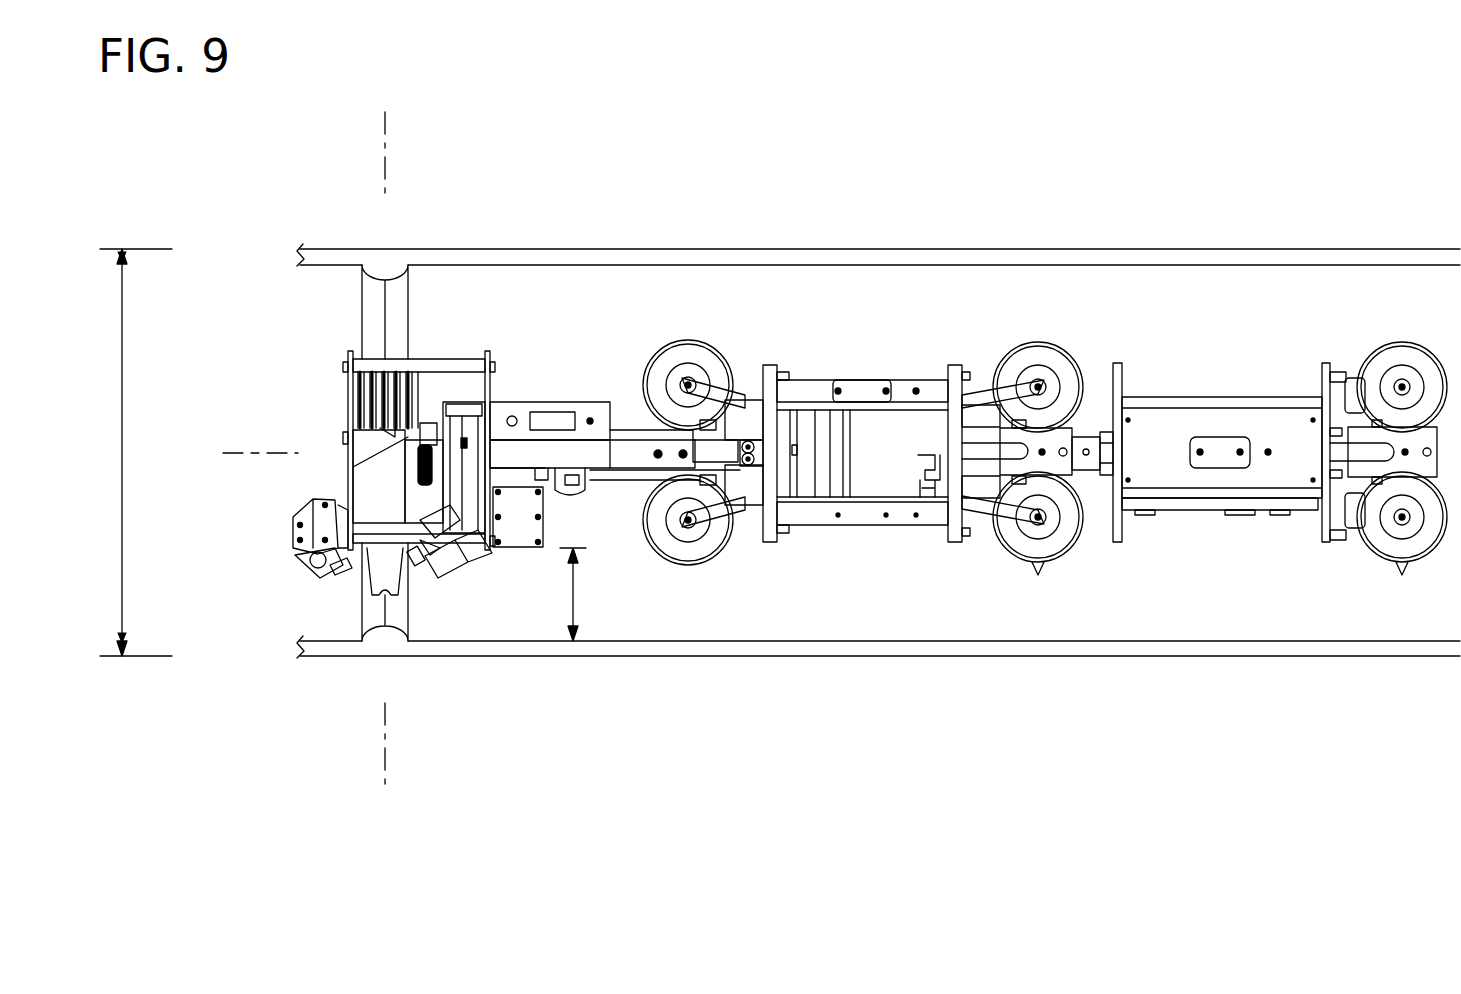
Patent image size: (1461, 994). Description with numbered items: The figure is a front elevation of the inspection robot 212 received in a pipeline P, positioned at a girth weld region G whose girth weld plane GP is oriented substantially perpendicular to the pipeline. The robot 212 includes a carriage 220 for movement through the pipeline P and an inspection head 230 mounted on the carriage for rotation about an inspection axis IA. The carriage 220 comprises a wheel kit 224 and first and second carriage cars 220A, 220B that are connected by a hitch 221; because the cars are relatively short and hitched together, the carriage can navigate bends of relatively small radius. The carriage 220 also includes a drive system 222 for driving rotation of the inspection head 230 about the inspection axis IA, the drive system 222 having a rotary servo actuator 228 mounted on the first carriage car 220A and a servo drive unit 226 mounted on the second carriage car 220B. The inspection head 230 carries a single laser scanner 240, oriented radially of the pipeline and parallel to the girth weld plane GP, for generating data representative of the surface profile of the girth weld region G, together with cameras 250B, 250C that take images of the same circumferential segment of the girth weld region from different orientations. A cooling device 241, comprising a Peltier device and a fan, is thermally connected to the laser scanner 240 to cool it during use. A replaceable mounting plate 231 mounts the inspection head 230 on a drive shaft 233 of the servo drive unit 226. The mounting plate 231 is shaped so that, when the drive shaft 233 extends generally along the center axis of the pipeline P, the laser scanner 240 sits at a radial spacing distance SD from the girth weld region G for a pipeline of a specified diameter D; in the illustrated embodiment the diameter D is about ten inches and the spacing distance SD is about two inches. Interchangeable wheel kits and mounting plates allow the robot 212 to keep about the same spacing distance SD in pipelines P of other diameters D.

The inspection robot 212 is at (489, 814).
The carriage 220 is at (1045, 497).
The first carriage car 220A is at (891, 473).
The second carriage car 220B is at (1280, 481).
The hitch 221 is at (1070, 428).
The drive system 222 is at (860, 440).
The wheel kit 224 is at (1045, 347).
The servo drive unit 226 is at (1223, 422).
The rotary servo actuator 228 is at (833, 483).
The inspection head 230 is at (469, 460).
The replaceable mounting plate 231 is at (497, 393).
The drive shaft 233 is at (660, 472).
The laser scanner 240 is at (368, 492).
The cooling device 241 is at (428, 440).
The camera 250B is at (312, 558).
The camera 250C is at (463, 568).
The girth weld region G is at (378, 273).
The girth weld plane GP is at (388, 454).
The pipeline P is at (848, 249).
The diameter D is at (136, 452).
The inspection axis IA is at (242, 454).
The spacing distance SD is at (580, 594).